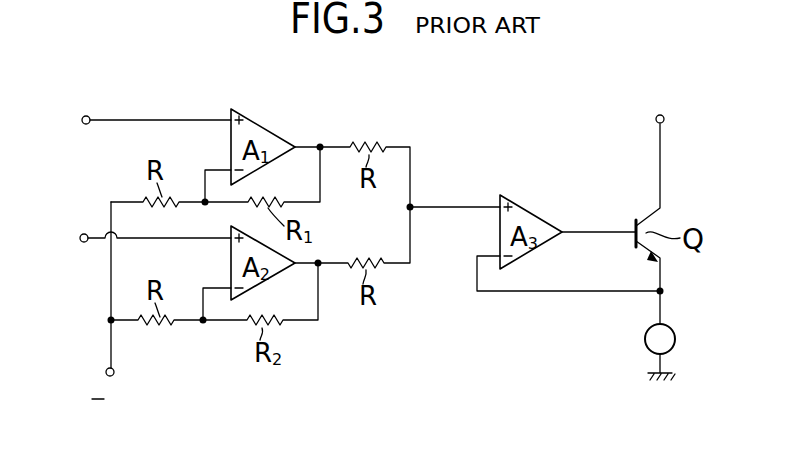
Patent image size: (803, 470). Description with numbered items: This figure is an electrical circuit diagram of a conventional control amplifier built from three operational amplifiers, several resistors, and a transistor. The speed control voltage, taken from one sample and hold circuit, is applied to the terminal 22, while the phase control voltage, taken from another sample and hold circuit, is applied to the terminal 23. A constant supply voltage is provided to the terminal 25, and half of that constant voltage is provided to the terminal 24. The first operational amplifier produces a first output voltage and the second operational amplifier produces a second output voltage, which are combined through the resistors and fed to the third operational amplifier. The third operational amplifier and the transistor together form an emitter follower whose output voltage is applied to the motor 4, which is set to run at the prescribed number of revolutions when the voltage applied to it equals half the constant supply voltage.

The terminal 22 is at (89, 118).
The terminal 23 is at (84, 234).
The terminal 24 is at (113, 369).
The terminal 25 is at (656, 122).
The motor 4 is at (646, 336).